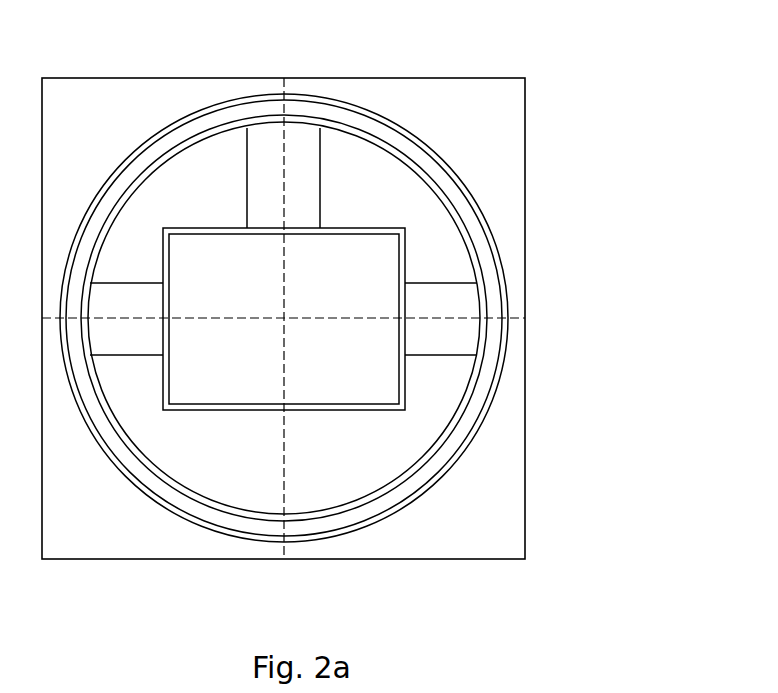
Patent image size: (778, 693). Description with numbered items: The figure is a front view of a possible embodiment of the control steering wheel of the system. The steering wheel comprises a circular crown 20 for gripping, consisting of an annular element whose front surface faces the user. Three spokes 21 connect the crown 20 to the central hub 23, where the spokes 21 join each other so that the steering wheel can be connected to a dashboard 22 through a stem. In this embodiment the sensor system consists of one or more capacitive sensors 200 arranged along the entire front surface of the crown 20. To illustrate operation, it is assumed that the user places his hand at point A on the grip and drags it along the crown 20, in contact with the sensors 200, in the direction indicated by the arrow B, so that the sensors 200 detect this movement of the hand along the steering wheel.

The circular crown 20 is at (168, 120).
The capacitive sensors 200 is at (410, 143).
The spokes 21 is at (438, 338).
The dashboard 22 is at (515, 536).
The central hub 23 is at (207, 393).
The point A is at (517, 305).
The arrow B is at (553, 192).